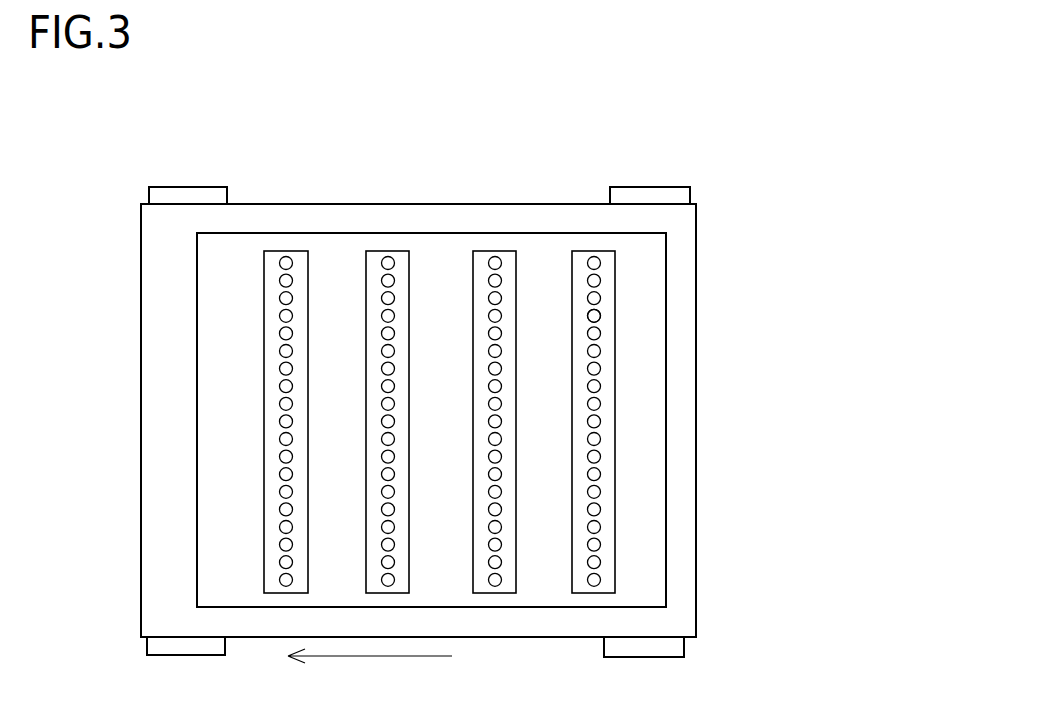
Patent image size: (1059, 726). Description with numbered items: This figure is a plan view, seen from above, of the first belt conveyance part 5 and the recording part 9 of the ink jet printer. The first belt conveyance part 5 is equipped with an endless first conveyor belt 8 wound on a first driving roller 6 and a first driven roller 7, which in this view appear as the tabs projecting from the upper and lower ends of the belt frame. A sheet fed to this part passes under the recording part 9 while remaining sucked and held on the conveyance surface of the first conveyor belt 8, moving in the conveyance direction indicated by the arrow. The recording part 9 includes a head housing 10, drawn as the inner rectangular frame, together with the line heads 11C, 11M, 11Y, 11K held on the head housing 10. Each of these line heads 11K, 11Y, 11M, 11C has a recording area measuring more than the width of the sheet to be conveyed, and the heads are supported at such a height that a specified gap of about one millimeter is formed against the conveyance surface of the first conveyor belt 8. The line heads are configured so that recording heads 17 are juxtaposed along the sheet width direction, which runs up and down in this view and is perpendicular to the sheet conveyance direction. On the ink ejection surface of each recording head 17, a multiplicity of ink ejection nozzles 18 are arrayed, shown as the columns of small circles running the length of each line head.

The first belt conveyance part 5 is at (116, 381).
The first driving roller 6 is at (183, 197).
The first driven roller 7 is at (656, 197).
The first conveyor belt 8 is at (162, 567).
The recording part 9 is at (170, 260).
The head housing 10 is at (667, 565).
The line head 11K is at (282, 246).
The line head 11Y is at (383, 246).
The line head 11M is at (502, 246).
The line head 11C is at (598, 246).
The recording head 17 is at (283, 513).
The ink ejection nozzle 18 is at (600, 318).